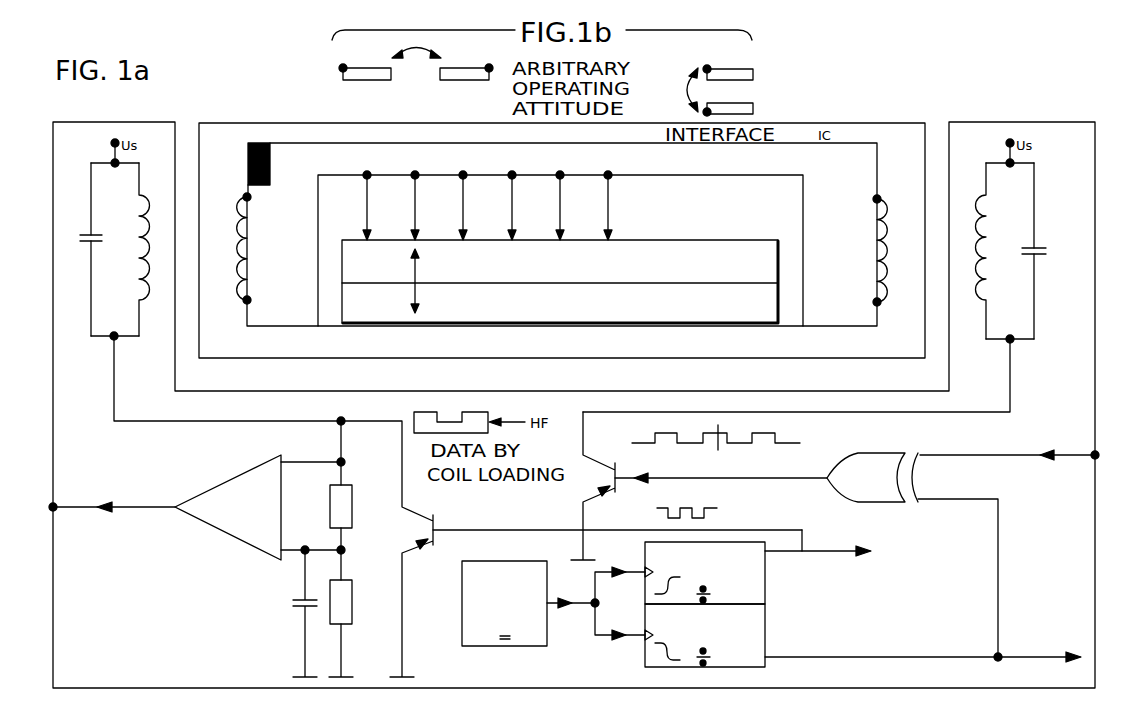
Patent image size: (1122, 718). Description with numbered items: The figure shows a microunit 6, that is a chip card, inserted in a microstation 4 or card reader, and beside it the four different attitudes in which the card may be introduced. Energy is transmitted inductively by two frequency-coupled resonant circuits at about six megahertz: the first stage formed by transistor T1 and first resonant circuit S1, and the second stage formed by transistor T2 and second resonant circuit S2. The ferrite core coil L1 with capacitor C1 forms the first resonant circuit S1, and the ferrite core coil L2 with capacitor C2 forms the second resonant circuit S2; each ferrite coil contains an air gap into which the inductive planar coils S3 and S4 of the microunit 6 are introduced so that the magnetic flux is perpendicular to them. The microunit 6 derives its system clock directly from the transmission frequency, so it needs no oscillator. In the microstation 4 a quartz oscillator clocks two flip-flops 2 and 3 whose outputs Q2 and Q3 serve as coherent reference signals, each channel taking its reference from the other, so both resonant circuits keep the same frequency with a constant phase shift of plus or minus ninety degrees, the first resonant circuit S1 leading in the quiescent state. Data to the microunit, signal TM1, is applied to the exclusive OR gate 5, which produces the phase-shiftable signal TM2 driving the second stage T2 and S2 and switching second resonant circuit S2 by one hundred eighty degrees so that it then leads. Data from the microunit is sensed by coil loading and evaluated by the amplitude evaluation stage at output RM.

The flip-flop 2 is at (666, 570).
The flip-flop 3 is at (666, 634).
The microstation 4 is at (780, 530).
The exclusive OR gate 5 is at (912, 555).
The microunit 6 is at (866, 187).
The transistor T1 is at (571, 549).
The transistor T2 is at (599, 486).
The first resonant circuit S1 is at (222, 367).
The second resonant circuit S2 is at (800, 365).
The planar coil S3 is at (845, 260).
The planar coil S4 is at (277, 259).
The ferrite core coil L1 is at (126, 249).
The ferrite core coil L2 is at (995, 251).
The capacitor C1 is at (83, 249).
The capacitor C2 is at (1043, 251).
The amplitude evaluation output RM is at (195, 496).
The data signal to microunit TM1 is at (1009, 456).
The phase-shiftable signal TM2 is at (721, 450).
The oscillator output Q2 is at (849, 561).
The oscillator output Q3 is at (923, 643).